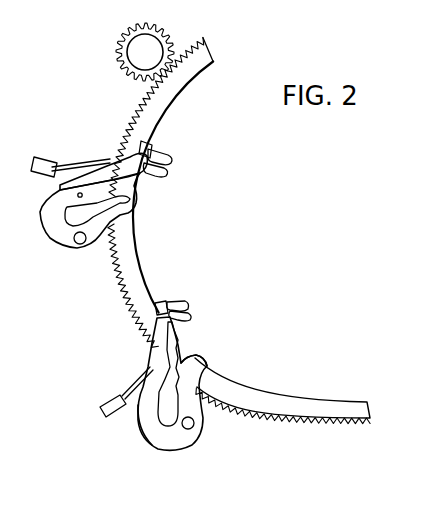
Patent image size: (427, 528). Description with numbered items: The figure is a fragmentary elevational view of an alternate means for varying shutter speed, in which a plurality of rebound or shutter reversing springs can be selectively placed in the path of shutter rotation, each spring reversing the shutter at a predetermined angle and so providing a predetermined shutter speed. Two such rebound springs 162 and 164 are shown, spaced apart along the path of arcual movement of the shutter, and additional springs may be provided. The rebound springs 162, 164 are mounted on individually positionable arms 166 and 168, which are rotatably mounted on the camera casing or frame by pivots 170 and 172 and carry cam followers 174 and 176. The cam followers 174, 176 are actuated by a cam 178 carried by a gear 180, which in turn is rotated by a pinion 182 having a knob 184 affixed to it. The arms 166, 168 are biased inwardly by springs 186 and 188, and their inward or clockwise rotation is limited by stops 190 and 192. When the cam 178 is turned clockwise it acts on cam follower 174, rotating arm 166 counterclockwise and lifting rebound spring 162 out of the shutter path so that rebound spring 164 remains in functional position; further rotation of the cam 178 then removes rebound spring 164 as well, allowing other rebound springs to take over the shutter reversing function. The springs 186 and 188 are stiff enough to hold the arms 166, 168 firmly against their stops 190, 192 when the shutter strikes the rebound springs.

The rebound spring 162 is at (192, 315).
The rebound spring 164 is at (170, 160).
The arm 166 is at (160, 343).
The arm 168 is at (117, 166).
The pivot 170 is at (195, 427).
The pivot 172 is at (80, 245).
The cam follower 174 is at (196, 360).
The cam follower 176 is at (136, 205).
The cam 178 is at (237, 393).
The gear 180 is at (285, 430).
The pinion 182 is at (159, 30).
The knob 184 is at (127, 47).
The spring 186 is at (147, 362).
The spring 188 is at (92, 170).
The stop 190 is at (147, 427).
The stop 192 is at (76, 191).